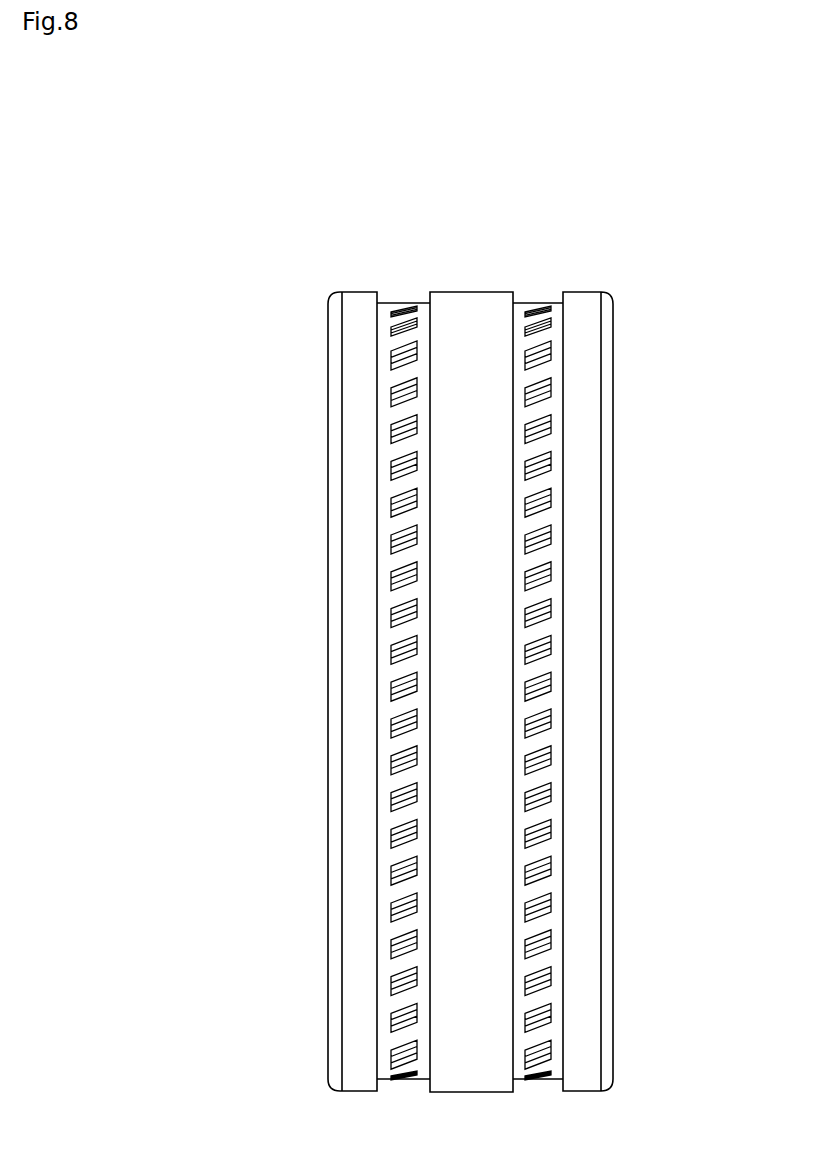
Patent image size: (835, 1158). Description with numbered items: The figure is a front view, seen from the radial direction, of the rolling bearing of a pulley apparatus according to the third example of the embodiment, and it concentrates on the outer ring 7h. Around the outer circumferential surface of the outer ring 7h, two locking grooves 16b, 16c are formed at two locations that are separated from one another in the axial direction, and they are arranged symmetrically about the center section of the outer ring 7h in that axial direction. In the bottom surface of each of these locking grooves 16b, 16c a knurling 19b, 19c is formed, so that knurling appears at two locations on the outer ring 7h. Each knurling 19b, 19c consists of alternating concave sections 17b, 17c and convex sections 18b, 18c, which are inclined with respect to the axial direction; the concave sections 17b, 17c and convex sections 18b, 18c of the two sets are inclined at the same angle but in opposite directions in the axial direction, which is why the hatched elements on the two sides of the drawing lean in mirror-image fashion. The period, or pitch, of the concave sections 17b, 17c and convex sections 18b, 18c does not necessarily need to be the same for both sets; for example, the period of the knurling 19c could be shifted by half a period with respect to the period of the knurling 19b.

The outer ring 7h is at (357, 453).
The locking groove 16b is at (566, 302).
The locking groove 16c is at (378, 302).
The concave section 17b is at (547, 603).
The concave section 17c is at (393, 698).
The convex section 18b is at (545, 487).
The convex section 18c is at (397, 560).
The knurling 19b is at (550, 375).
The knurling 19c is at (393, 380).